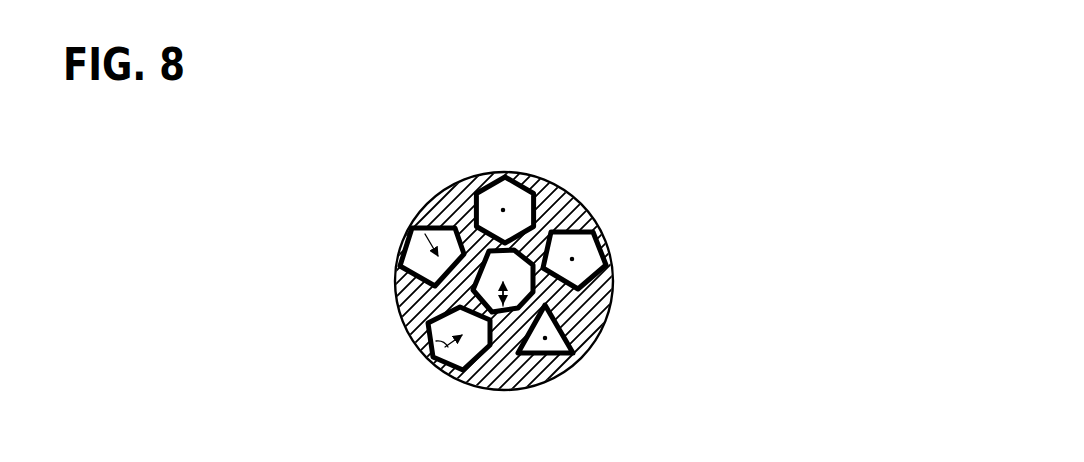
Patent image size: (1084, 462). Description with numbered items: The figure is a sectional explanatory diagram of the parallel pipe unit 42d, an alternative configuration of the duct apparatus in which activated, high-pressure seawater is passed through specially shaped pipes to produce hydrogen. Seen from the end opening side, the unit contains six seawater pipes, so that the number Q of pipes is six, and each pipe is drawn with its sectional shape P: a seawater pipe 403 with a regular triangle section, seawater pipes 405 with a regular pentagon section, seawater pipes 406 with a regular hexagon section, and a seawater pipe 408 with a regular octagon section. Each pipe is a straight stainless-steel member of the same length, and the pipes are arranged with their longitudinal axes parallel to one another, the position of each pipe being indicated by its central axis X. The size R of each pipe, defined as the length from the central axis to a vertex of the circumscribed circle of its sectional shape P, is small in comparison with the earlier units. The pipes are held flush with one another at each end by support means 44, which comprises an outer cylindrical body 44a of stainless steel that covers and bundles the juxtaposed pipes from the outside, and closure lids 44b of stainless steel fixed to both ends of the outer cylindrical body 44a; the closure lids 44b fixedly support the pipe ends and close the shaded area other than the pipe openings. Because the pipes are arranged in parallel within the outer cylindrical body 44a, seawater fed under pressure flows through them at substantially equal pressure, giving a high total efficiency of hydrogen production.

The seawater pipe having a regular triangle sectional shape 403 is at (549, 356).
The seawater pipe having a regular pentagon sectional shape 405 is at (404, 253).
The seawater pipe having a regular hexagon sectional shape 406 is at (474, 200).
The seawater pipe having a regular octagon sectional shape 408 is at (535, 296).
The parallel pipe unit 42d is at (676, 180).
The support means 44 is at (692, 200).
The outer cylindrical body 44a is at (600, 213).
The closure lid 44b is at (607, 288).
The sectional shape P is at (428, 226).
The size R is at (434, 230).
The central axis X is at (422, 238).
The number of pipes Q is at (680, 381).